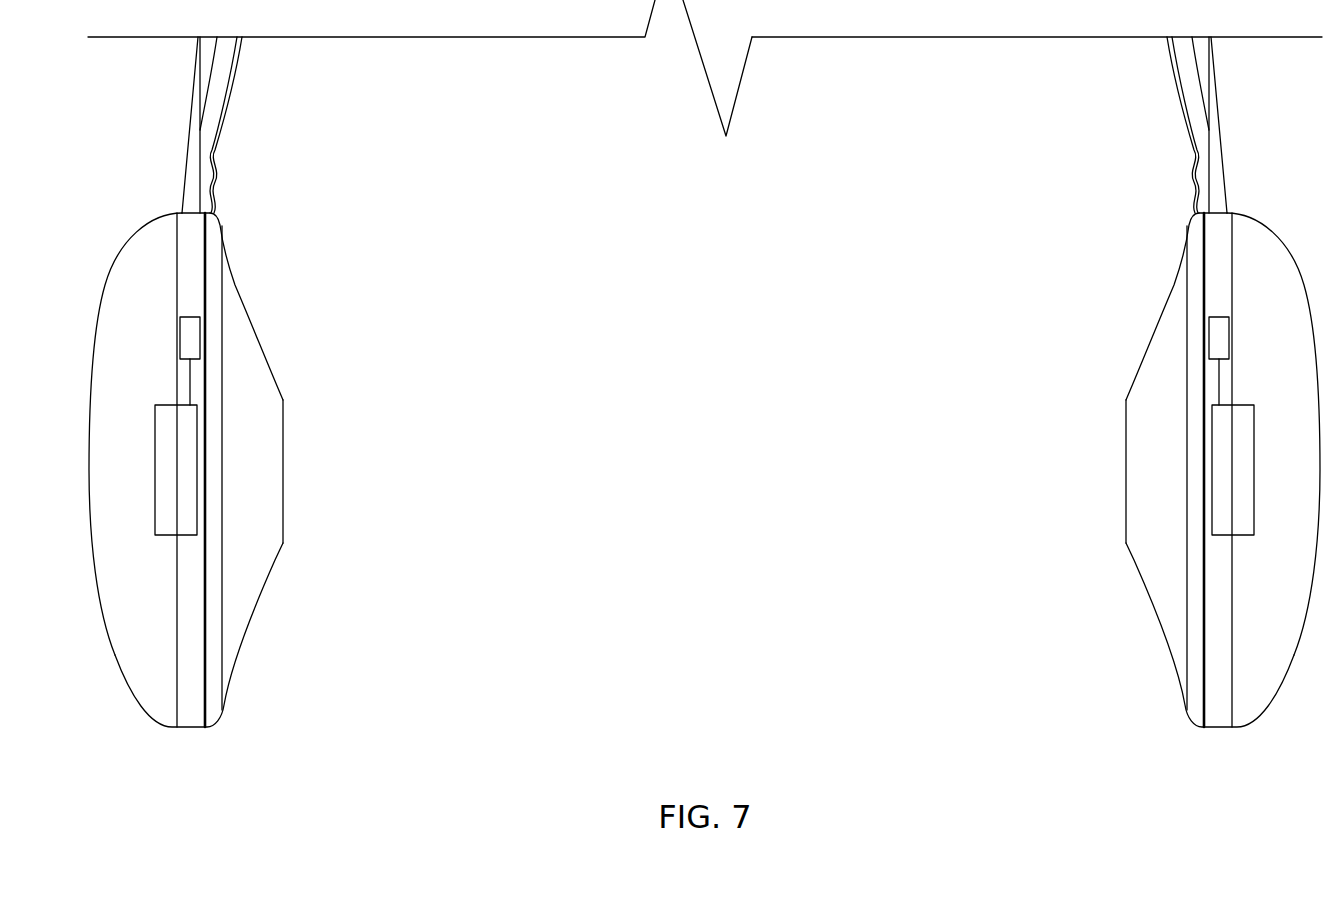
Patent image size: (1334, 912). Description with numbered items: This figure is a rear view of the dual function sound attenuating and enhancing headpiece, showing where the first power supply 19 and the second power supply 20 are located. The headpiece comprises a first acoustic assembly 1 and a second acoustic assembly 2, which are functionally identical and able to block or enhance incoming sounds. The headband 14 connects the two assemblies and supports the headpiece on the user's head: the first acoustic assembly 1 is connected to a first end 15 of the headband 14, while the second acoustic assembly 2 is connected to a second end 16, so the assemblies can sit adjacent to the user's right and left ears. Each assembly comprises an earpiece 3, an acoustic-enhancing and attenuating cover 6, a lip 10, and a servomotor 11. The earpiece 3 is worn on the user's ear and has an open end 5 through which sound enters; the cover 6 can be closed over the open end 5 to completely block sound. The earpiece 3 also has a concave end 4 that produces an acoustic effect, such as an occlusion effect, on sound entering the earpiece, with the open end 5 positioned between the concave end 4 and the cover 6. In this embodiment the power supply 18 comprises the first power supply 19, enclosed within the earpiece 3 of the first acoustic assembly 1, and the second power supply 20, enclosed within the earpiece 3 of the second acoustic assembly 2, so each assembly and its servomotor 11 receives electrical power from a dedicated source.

The first acoustic assembly 1 is at (125, 237).
The second acoustic assembly 2 is at (1277, 233).
The earpiece 3 is at (252, 318).
The concave end 4 is at (285, 398).
The open end 5 is at (205, 728).
The acoustic-enhancing and attenuating cover 6 is at (150, 713).
The lip 10 is at (190, 728).
The servomotor 11 is at (163, 470).
The headband 14 is at (188, 96).
The first end 15 is at (182, 210).
The second end 16 is at (1230, 212).
The power supply 18 is at (170, 347).
The first power supply 19 is at (185, 336).
The second power supply 20 is at (1222, 341).